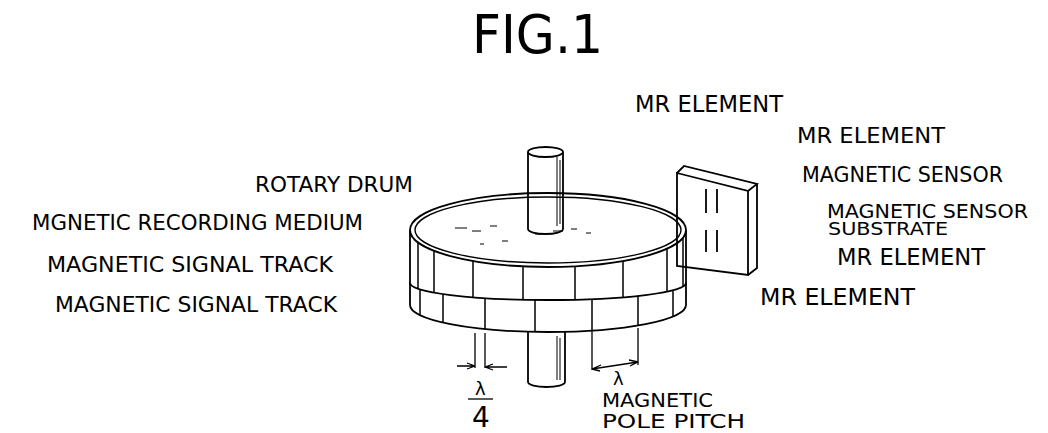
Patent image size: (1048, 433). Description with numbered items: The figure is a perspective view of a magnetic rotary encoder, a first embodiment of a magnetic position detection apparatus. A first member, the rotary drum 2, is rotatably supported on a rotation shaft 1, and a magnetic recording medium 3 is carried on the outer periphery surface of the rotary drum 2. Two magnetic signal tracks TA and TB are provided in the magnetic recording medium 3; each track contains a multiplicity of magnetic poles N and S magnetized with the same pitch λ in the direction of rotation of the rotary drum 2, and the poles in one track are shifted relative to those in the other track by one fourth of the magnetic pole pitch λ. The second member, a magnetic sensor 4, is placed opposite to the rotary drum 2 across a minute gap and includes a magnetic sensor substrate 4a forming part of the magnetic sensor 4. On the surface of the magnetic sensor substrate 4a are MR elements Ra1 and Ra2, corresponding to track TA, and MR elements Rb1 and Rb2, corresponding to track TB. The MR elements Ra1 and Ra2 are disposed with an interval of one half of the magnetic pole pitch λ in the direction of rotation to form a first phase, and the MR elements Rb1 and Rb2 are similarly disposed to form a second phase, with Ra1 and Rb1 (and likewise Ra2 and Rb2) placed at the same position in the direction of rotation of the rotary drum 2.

The rotation shaft 1 is at (527, 177).
The rotary drum 2 is at (463, 215).
The magnetic recording medium 3 is at (408, 231).
The magnetic sensor 4 is at (737, 214).
The magnetic sensor substrate 4a is at (757, 210).
The magnetic signal track TA is at (408, 252).
The magnetic signal track TB is at (408, 286).
The MR element Ra1 is at (703, 197).
The MR element Ra2 is at (722, 200).
The MR element Rb1 is at (706, 250).
The MR element Rb2 is at (720, 242).